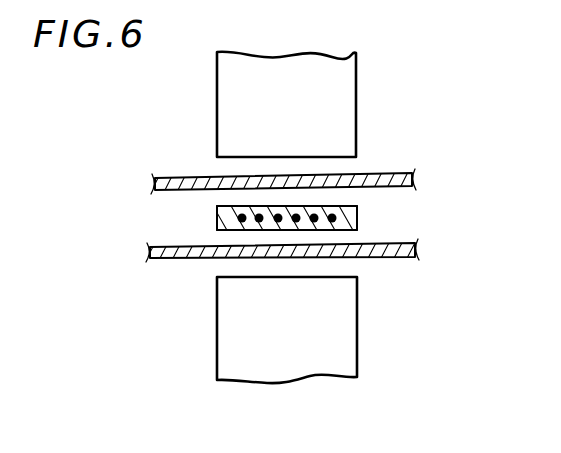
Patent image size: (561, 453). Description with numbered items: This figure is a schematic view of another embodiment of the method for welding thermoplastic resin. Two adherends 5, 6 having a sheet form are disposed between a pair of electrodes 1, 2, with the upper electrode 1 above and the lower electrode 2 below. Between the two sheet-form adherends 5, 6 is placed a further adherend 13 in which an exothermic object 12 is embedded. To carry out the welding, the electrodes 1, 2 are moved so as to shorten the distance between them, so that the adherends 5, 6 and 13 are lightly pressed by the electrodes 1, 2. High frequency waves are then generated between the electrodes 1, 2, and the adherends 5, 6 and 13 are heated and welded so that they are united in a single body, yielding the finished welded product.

The electrode 1 is at (343, 110).
The electrode 2 is at (338, 330).
The adherend 5 is at (395, 172).
The adherend 6 is at (412, 253).
The exothermic object 12 is at (217, 214).
The adherend 13 is at (357, 218).